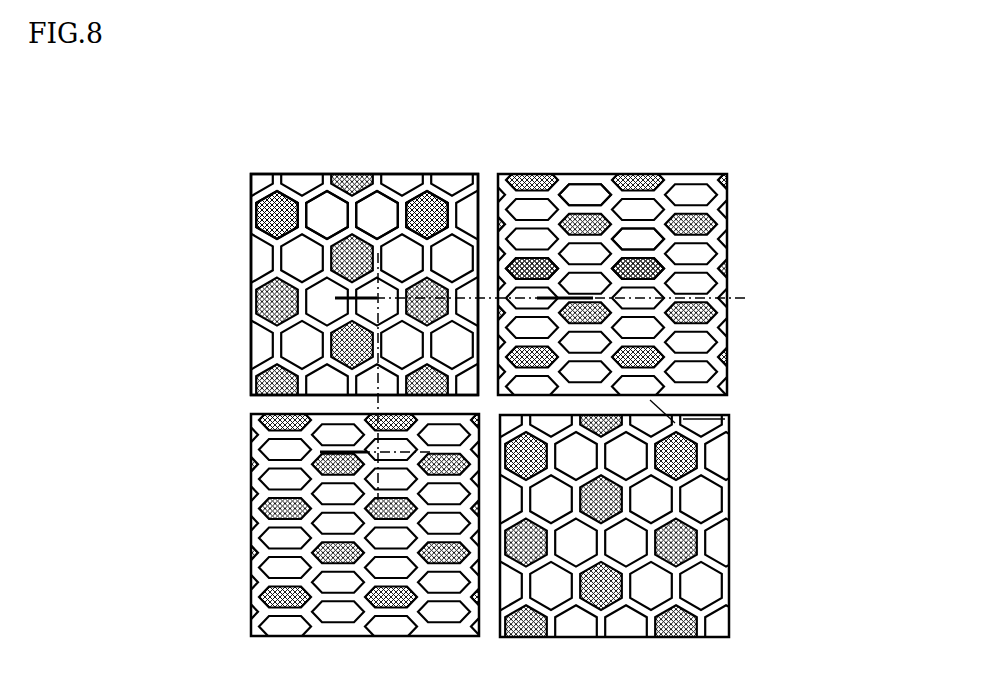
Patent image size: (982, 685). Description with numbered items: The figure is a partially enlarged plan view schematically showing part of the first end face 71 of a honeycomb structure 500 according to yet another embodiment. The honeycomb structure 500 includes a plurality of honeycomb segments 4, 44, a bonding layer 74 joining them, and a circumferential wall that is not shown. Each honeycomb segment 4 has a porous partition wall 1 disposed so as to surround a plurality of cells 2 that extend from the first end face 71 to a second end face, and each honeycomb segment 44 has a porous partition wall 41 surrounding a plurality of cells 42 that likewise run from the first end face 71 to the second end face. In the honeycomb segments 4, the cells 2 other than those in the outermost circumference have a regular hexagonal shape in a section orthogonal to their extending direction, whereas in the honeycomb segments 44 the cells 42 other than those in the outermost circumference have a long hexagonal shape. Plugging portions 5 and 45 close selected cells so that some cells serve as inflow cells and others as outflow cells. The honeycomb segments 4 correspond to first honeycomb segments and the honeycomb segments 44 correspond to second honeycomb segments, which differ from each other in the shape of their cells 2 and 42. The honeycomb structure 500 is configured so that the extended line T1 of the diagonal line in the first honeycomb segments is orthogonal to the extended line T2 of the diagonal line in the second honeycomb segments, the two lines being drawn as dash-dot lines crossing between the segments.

The honeycomb structure 500 is at (803, 70).
The partition wall 1 is at (325, 215).
The cells 2 is at (380, 222).
The honeycomb segment 4 is at (243, 283).
The plugging portion 5 is at (289, 199).
The partition wall 41 is at (582, 211).
The cells 42 is at (633, 240).
The honeycomb segment 44 is at (737, 300).
The plugging portion 45 is at (543, 262).
The first end face 71 is at (228, 152).
The bonding layer 74 is at (725, 417).
The extended line of diagonal line T1 is at (377, 309).
The extended line of diagonal line T2 is at (540, 300).